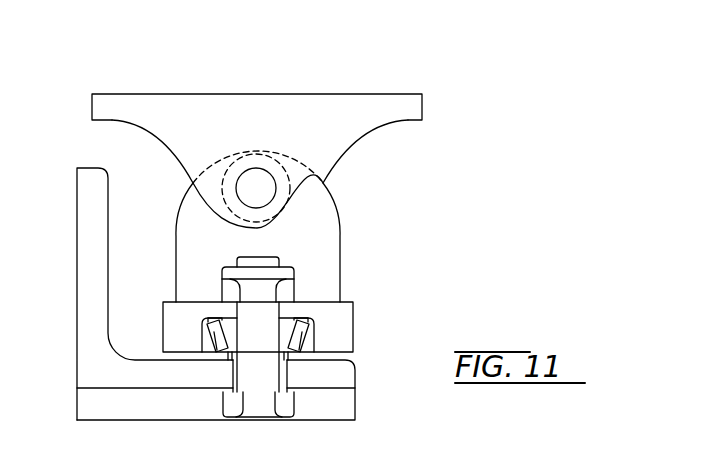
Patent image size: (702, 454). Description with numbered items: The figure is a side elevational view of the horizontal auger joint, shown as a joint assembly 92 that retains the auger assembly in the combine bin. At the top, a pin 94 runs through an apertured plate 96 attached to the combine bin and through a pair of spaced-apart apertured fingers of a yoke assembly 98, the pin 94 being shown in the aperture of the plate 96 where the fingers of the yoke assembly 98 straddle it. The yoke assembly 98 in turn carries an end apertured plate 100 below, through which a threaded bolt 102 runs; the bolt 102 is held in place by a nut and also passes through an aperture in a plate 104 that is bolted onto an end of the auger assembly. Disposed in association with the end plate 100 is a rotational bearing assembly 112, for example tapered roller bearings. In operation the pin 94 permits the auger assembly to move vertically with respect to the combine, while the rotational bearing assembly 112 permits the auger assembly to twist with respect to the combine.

The joint assembly 92 is at (416, 201).
The pin 94 is at (276, 186).
The apertured plate 96 is at (358, 94).
The yoke assembly 98 is at (332, 247).
The end apertured plate 100 is at (355, 307).
The threaded bolt 102 is at (260, 412).
The plate 104 is at (355, 372).
The rotational bearing assembly 112 is at (217, 323).